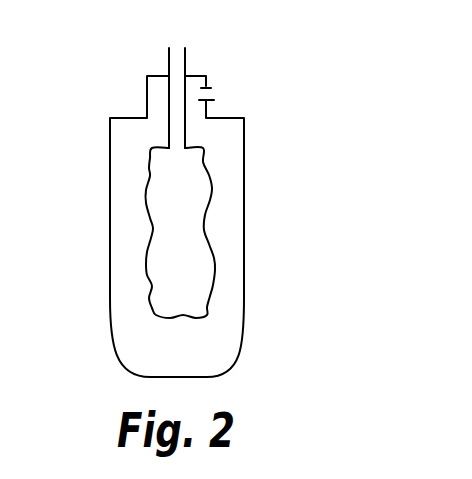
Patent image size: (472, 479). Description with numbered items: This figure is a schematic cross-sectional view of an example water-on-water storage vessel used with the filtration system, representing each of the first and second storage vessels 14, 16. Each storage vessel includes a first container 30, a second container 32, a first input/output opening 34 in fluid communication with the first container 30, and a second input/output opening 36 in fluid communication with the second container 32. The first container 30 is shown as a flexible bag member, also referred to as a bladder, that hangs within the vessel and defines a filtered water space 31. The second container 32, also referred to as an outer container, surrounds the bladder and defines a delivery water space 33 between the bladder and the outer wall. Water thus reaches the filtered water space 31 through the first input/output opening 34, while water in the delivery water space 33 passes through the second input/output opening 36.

The first storage vessel 14 is at (221, 198).
The second storage vessel 16 is at (221, 198).
The first container 30 is at (153, 230).
The filtered water space 31 is at (192, 245).
The second container 32 is at (112, 329).
The delivery water space 33 is at (192, 360).
The first input/output opening 34 is at (177, 52).
The second input/output opening 36 is at (215, 96).